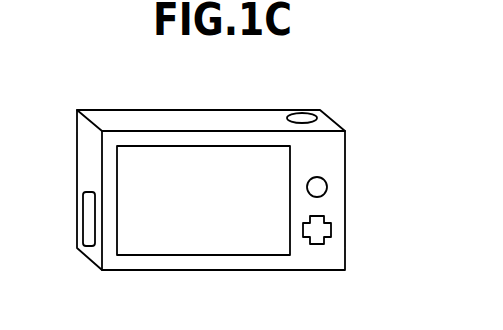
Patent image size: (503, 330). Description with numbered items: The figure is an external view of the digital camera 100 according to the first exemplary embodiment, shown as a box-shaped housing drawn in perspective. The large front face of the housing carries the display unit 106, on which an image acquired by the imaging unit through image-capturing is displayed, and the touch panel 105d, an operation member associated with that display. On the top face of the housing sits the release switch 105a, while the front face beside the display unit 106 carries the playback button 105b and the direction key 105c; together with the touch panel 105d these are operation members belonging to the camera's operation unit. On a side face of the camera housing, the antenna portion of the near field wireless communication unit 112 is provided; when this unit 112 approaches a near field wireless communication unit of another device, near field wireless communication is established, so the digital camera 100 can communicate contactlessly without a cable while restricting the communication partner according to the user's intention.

The digital camera 100 is at (211, 190).
The display unit 106 is at (290, 157).
The release switch 105a is at (312, 112).
The playback button 105b is at (327, 187).
The direction key 105c is at (331, 227).
The touch panel 105d is at (155, 146).
The near field wireless communication unit 112 is at (83, 215).